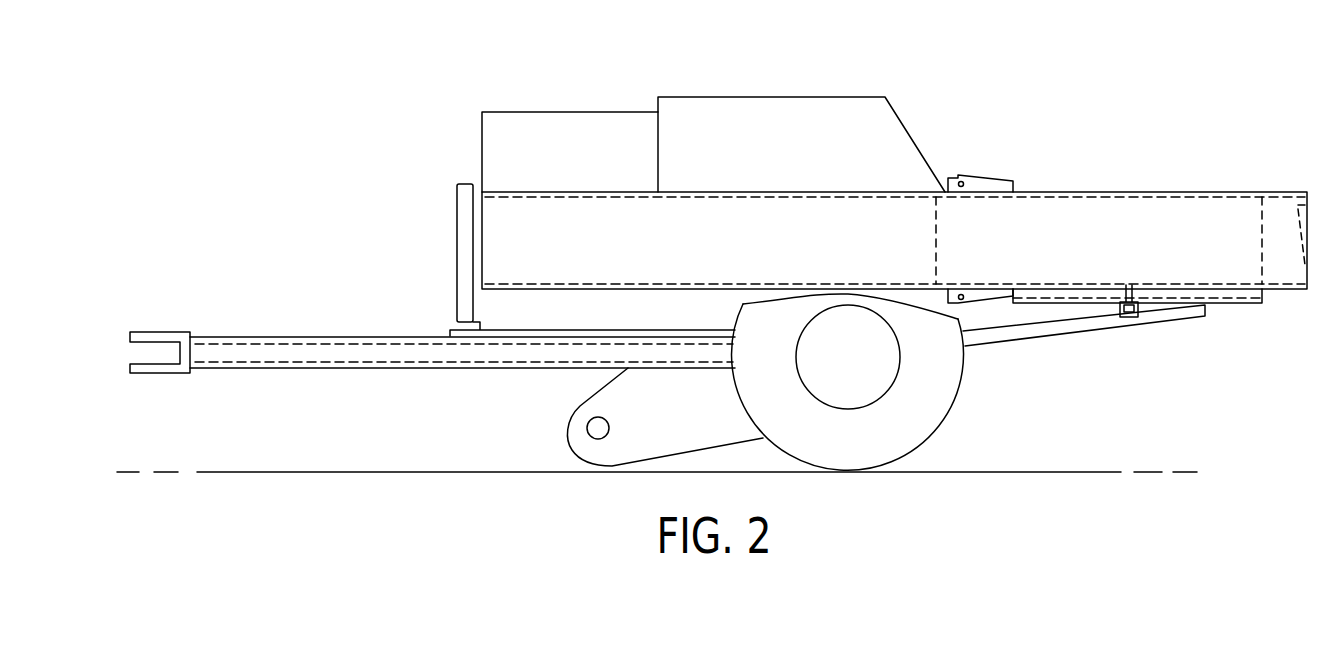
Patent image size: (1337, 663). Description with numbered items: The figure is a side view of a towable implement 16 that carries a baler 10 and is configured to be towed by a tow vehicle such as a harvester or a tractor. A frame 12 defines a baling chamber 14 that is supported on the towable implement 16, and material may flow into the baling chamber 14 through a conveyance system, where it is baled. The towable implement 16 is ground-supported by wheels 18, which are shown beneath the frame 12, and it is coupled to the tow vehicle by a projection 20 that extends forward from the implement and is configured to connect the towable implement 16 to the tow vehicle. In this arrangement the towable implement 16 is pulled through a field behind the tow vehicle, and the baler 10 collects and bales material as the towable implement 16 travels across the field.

The baler 10 is at (1102, 160).
The frame 12 is at (983, 192).
The baling chamber 14 is at (1096, 248).
The towable implement 16 is at (818, 68).
The wheels 18 is at (922, 415).
The projection 20 is at (155, 373).